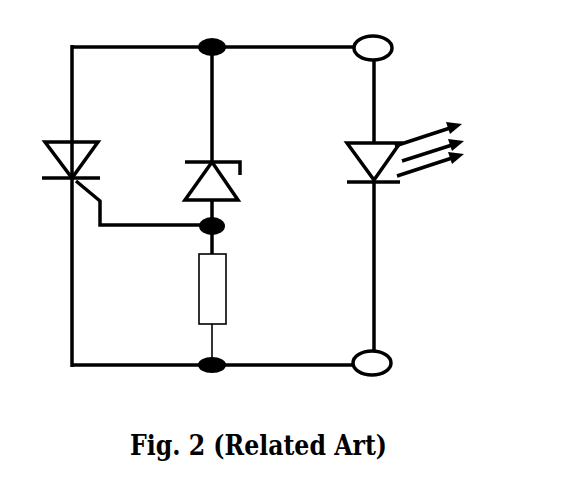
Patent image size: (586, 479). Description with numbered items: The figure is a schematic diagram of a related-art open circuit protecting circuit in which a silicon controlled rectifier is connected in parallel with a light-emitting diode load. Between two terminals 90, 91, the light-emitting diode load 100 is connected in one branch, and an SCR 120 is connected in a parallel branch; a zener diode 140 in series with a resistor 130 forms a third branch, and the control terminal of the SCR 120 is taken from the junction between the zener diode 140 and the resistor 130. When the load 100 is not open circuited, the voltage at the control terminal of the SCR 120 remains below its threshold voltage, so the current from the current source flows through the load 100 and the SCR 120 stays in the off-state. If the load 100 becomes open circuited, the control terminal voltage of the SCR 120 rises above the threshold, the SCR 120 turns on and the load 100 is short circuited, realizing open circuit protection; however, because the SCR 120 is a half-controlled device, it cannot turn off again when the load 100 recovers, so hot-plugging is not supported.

The first terminal 90 is at (397, 45).
The second terminal 91 is at (400, 362).
The LED load 100 is at (412, 154).
The SCR 120 is at (127, 167).
The resistor 130 is at (242, 309).
The zener diode 140 is at (241, 161).